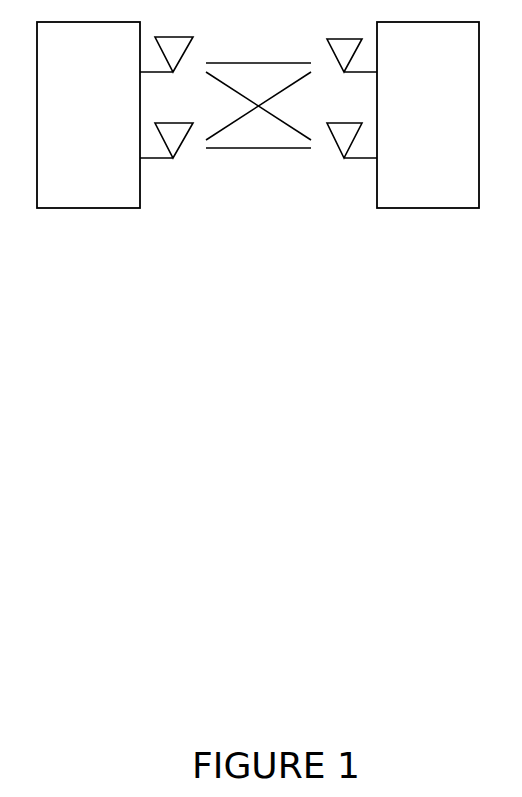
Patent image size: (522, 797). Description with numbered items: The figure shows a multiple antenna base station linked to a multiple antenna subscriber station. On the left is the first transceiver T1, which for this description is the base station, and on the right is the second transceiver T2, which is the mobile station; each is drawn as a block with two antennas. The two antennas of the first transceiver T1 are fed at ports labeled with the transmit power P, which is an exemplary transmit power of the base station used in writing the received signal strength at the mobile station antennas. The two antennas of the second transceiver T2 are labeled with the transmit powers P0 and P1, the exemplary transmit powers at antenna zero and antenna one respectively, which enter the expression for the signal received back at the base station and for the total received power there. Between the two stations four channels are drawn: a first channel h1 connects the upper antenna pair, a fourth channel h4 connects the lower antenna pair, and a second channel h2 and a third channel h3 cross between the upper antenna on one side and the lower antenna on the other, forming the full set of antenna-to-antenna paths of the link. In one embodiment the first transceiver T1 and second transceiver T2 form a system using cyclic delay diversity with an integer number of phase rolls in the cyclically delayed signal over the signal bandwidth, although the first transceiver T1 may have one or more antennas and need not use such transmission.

The first transceiver T1 is at (88, 115).
The second transceiver T2 is at (428, 115).
The transmit power P is at (156, 99).
The transmit power at antenna 0 P0 is at (366, 59).
The transmit power at antenna 1 P1 is at (366, 142).
The first channel h1 is at (258, 52).
The second channel h2 is at (257, 106).
The third channel h3 is at (262, 106).
The fourth channel h4 is at (258, 158).